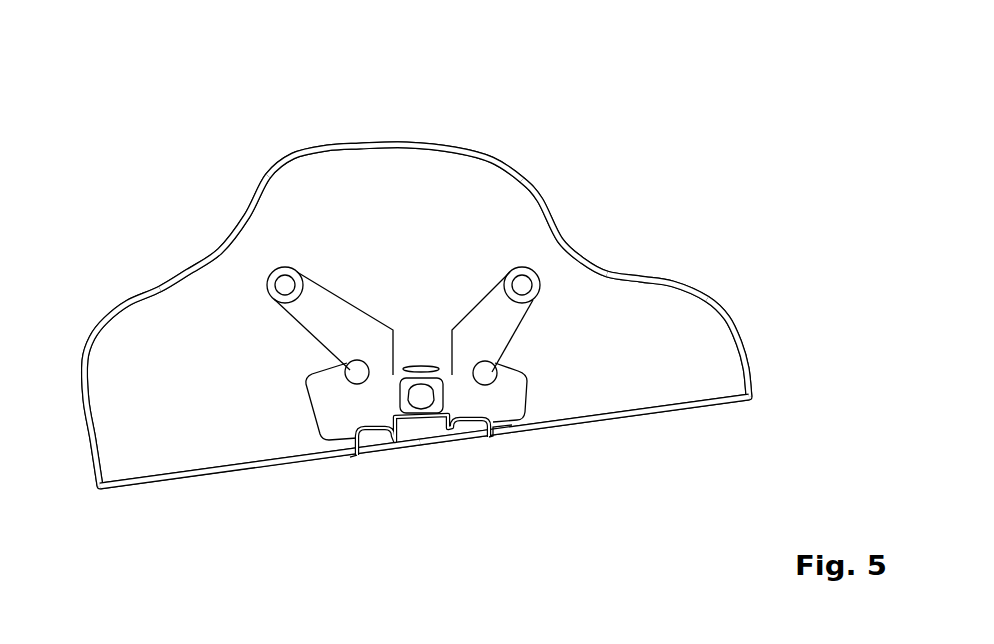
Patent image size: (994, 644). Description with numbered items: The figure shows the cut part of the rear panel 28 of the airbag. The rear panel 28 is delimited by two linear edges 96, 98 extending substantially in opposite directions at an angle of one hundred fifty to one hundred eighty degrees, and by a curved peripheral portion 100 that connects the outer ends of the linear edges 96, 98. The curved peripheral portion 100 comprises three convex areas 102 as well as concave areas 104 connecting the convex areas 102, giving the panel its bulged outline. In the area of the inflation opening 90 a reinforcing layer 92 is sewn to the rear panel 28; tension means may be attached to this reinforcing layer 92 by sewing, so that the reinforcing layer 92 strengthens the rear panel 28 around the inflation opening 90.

The rear panel 28 is at (701, 327).
The inflation opening 90 is at (427, 434).
The reinforcing layer 92 is at (508, 403).
The linear edge 96 is at (224, 478).
The linear edge 98 is at (688, 418).
The curved peripheral portion 100 is at (664, 277).
The convex areas 102 is at (459, 146).
The concave areas 104 is at (207, 262).